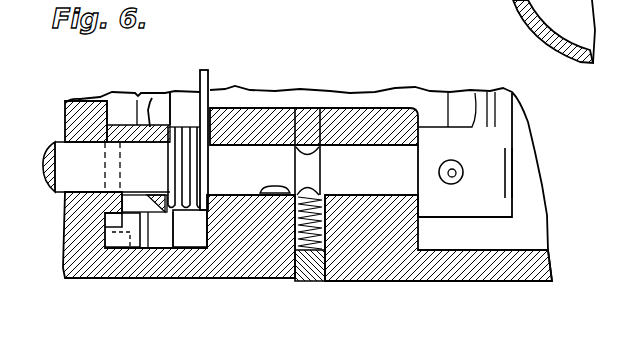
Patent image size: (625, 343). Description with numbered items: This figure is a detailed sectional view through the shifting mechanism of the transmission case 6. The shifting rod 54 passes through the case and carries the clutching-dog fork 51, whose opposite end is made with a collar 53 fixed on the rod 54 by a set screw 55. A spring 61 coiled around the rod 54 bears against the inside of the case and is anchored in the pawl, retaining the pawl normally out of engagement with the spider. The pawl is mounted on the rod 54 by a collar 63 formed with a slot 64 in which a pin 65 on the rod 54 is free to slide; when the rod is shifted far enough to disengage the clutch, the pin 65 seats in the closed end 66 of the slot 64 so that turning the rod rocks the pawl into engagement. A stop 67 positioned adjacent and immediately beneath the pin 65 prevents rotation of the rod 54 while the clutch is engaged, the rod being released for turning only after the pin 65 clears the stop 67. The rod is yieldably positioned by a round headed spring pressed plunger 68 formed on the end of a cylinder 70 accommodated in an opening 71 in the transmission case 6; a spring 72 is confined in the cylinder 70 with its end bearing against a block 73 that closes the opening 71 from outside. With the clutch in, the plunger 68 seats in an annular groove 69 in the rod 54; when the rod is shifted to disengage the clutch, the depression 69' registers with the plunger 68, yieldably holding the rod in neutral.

The transmission case 6 is at (418, 268).
The fork 51 is at (500, 108).
The collar 53 is at (500, 207).
The shifting rod 54 is at (63, 155).
The set screw 55 is at (460, 168).
The spring 61 is at (183, 127).
The collar 63 is at (137, 100).
The slot 64 is at (133, 207).
The pin 65 is at (110, 212).
The closed end of slot 66 is at (149, 250).
The stop 67 is at (137, 248).
The round headed spring pressed plunger 68 is at (314, 193).
The annular groove 69 is at (325, 120).
The depression 69' is at (251, 182).
The cylinder 70 is at (328, 222).
The opening 71 is at (280, 232).
The spring 72 is at (356, 126).
The block 73 is at (312, 281).